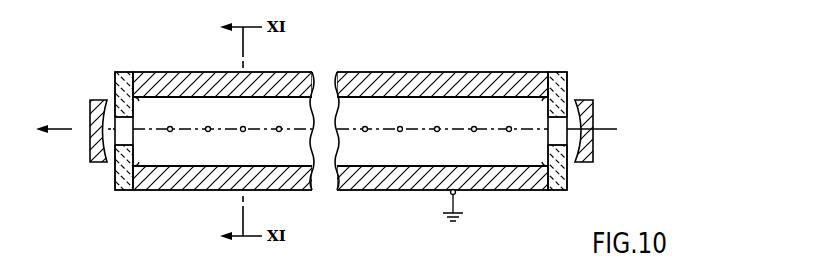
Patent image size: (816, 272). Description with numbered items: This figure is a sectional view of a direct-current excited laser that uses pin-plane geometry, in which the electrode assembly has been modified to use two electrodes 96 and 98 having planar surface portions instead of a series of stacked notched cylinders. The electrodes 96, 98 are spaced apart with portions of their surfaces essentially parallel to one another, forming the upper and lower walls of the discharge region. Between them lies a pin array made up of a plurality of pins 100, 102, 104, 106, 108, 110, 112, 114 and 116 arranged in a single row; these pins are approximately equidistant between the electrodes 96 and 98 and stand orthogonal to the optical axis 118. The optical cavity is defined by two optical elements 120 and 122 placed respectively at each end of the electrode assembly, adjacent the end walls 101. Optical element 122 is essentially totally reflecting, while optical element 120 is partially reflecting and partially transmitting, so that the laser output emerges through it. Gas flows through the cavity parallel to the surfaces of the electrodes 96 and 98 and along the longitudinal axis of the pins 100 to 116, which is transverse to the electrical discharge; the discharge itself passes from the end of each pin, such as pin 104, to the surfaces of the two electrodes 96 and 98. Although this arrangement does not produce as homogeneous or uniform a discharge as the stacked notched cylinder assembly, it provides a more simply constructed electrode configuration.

The electrode 96 is at (389, 72).
The electrode 98 is at (399, 192).
The pin 100 is at (170, 126).
The end wall 101 is at (115, 185).
The pin 102 is at (208, 132).
The pin 104 is at (243, 126).
The pin 106 is at (279, 132).
The pin 108 is at (365, 126).
The pin 110 is at (400, 132).
The pin 112 is at (437, 126).
The pin 114 is at (474, 132).
The pin 116 is at (509, 126).
The optical axis 118 is at (607, 129).
The optical element 120 is at (104, 100).
The optical element 122 is at (580, 100).